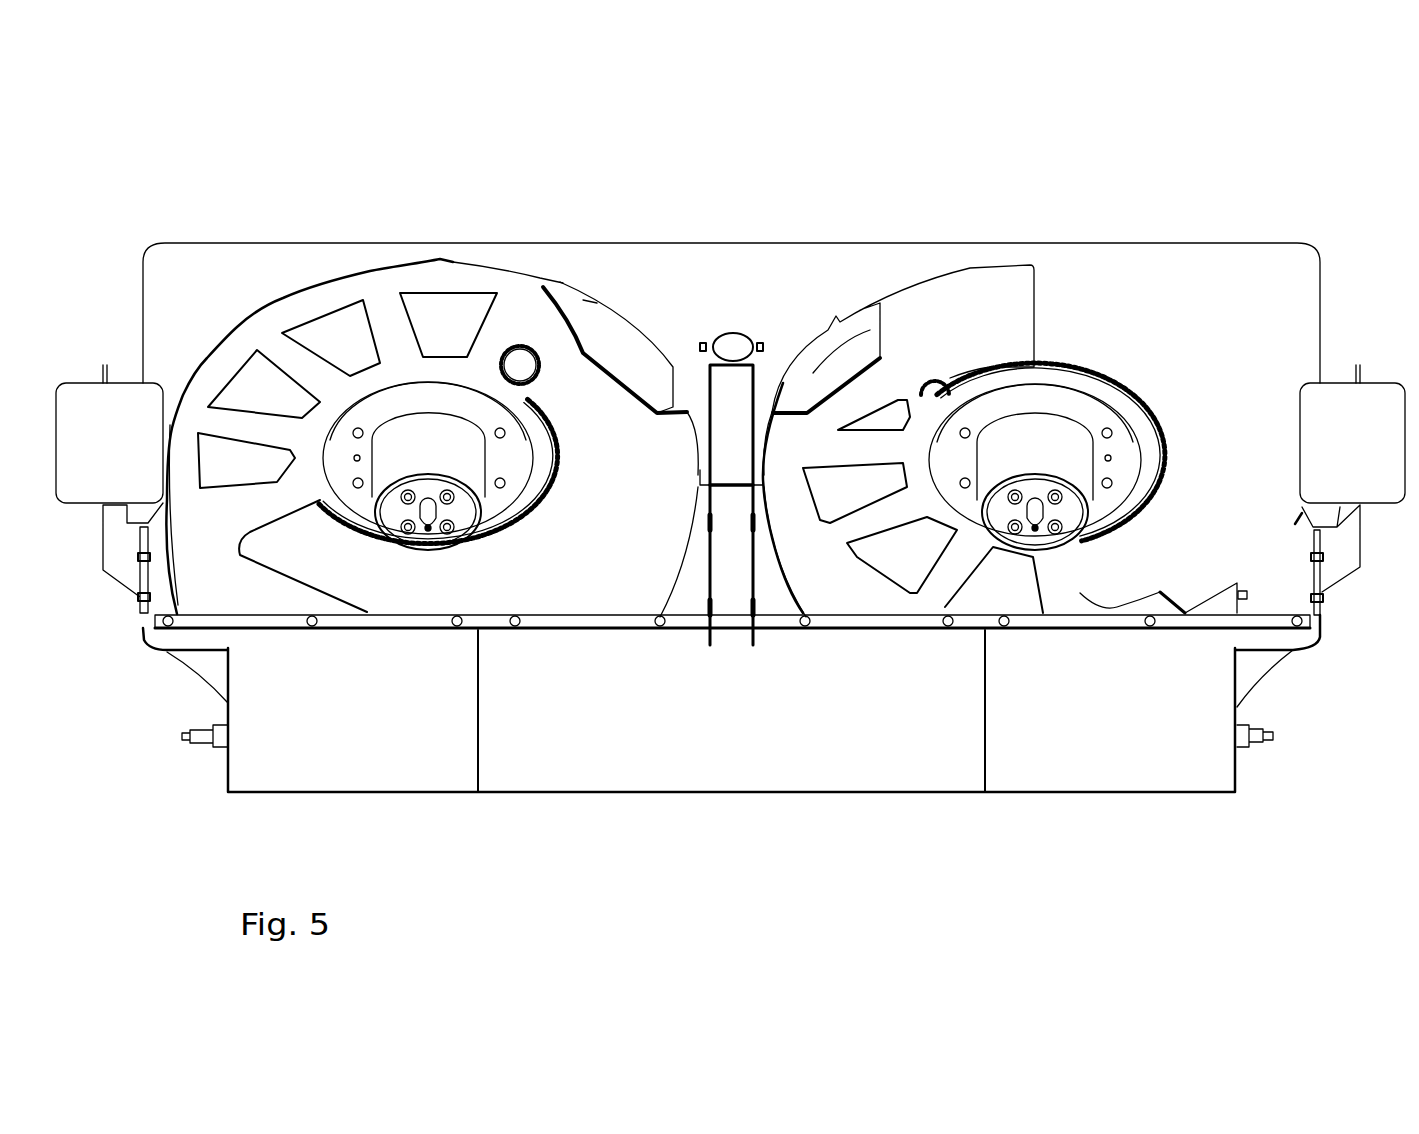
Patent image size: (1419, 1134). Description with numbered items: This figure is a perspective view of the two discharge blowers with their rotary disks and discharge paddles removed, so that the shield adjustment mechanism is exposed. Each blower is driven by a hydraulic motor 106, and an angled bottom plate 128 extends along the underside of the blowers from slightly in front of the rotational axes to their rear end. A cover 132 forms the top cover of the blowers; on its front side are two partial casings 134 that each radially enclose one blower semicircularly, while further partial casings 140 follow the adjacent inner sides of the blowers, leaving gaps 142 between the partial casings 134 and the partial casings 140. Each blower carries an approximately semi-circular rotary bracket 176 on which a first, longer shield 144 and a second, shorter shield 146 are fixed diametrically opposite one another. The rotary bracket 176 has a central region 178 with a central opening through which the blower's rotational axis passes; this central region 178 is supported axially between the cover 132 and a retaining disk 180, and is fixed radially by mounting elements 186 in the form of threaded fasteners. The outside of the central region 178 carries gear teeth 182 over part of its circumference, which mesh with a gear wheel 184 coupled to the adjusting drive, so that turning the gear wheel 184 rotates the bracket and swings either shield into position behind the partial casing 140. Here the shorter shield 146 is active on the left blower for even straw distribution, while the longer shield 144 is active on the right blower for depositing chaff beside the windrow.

The hydraulic motor 106 is at (420, 443).
The bottom plate 128 is at (748, 760).
The cover 132 is at (843, 243).
The partial casing 134 is at (680, 573).
The partial casing 140 is at (810, 367).
The gap 142 is at (770, 460).
The first shield 144 is at (972, 310).
The second shield 146 is at (620, 352).
The rotary bracket 176 is at (320, 300).
The central region 178 is at (335, 513).
The retaining disk 180 is at (458, 405).
The gear teeth 182 is at (498, 531).
The gear wheel 184 is at (523, 368).
The mounting element 186 is at (357, 488).